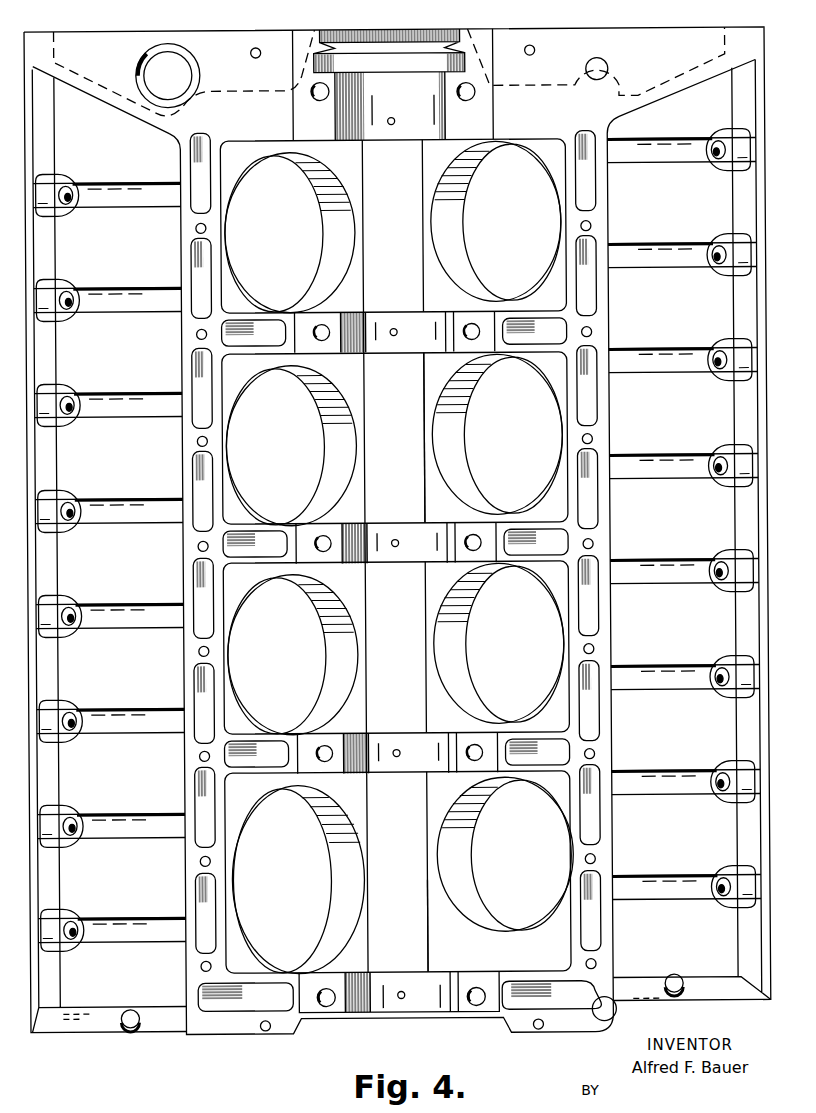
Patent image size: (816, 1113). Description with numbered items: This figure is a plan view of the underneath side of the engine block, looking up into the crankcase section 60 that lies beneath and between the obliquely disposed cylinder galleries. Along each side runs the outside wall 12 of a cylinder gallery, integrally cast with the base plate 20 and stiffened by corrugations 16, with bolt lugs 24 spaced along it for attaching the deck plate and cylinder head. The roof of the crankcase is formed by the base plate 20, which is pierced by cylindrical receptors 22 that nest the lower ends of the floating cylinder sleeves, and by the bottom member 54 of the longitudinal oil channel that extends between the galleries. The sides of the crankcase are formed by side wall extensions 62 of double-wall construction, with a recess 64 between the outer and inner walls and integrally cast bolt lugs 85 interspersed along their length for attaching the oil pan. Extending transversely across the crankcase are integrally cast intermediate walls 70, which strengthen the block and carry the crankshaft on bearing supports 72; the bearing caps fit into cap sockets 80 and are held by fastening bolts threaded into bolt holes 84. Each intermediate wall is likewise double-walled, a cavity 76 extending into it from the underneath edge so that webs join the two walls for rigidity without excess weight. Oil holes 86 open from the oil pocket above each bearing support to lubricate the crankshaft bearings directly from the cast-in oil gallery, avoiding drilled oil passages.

The outside wall 12 is at (105, 998).
The corrugations 16 is at (663, 478).
The base plate 20 is at (358, 820).
The receptors 22 is at (445, 632).
The bolt lugs 24 is at (735, 598).
The bottom member 54 is at (418, 912).
The crankcase section 60 is at (522, 957).
The side wall extensions 62 is at (203, 788).
The recess 64 is at (200, 878).
The intermediate walls 70 is at (430, 524).
The bearing supports 72 is at (377, 736).
The cavity 76 is at (396, 733).
The cap sockets 80 is at (488, 775).
The bolt holes 84 is at (340, 774).
The bolt lugs 85 is at (203, 655).
The oil holes 86 is at (402, 873).